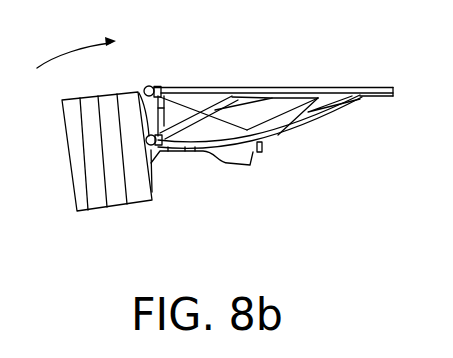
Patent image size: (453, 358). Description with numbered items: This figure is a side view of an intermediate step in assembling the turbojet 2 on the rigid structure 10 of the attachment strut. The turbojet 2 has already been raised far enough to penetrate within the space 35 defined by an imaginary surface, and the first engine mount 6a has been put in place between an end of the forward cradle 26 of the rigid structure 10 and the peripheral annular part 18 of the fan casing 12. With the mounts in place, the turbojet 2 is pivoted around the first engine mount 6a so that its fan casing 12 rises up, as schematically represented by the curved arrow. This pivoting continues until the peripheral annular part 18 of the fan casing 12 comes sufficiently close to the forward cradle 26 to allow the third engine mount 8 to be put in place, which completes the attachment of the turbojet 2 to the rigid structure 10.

The turbojet 2 is at (207, 151).
The first engine mount 6a is at (141, 98).
The third engine mount 8 is at (152, 87).
The rigid structure 10 is at (397, 45).
The fan casing 12 is at (99, 158).
The peripheral annular part 18 is at (152, 191).
The forward cradle 26 is at (183, 111).
The space 35 is at (284, 113).